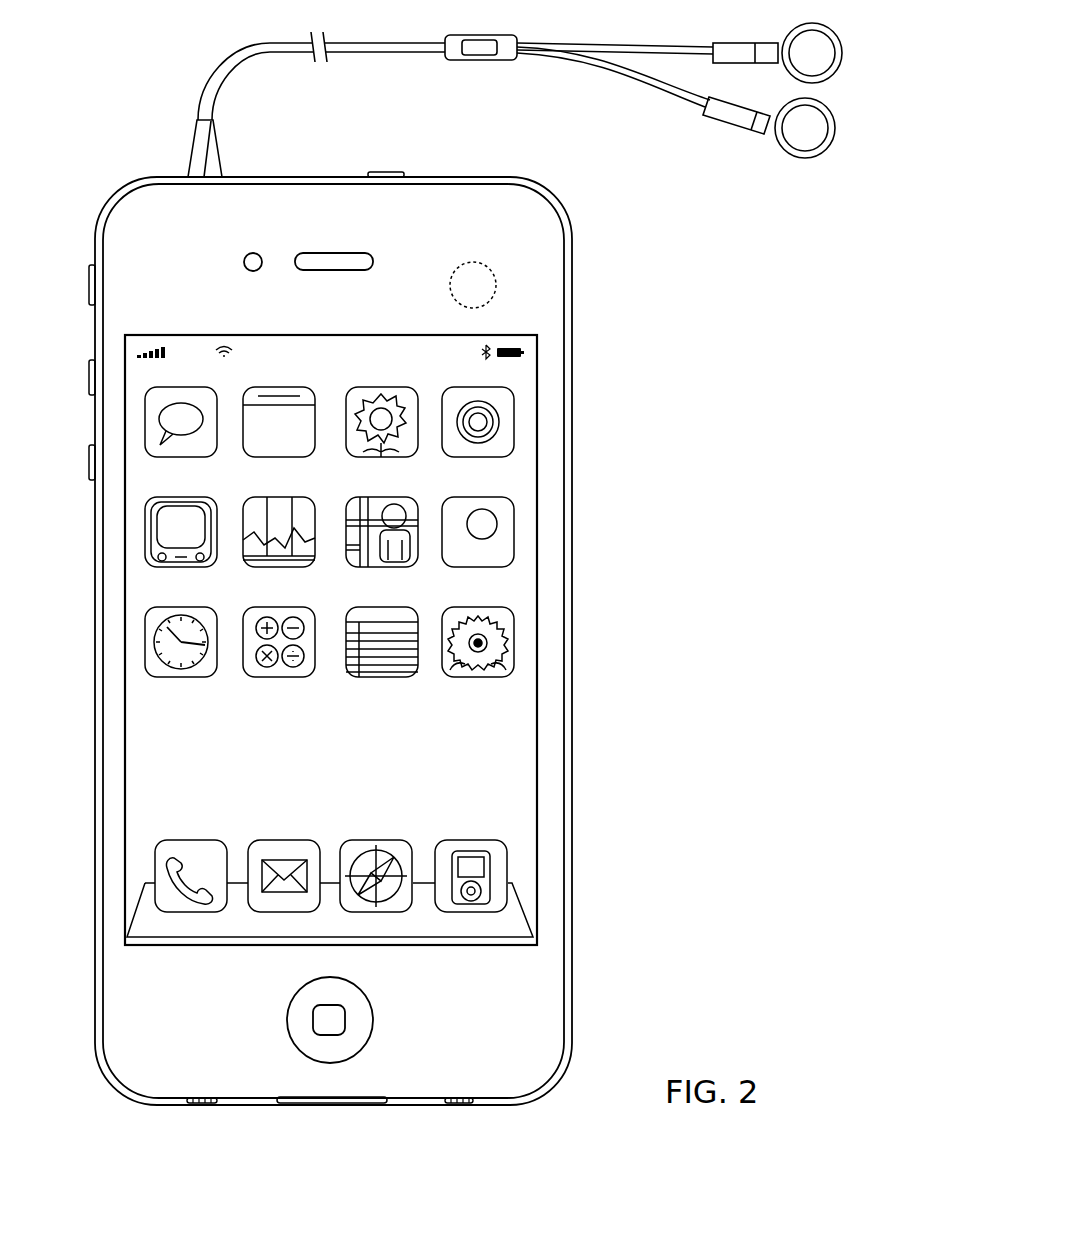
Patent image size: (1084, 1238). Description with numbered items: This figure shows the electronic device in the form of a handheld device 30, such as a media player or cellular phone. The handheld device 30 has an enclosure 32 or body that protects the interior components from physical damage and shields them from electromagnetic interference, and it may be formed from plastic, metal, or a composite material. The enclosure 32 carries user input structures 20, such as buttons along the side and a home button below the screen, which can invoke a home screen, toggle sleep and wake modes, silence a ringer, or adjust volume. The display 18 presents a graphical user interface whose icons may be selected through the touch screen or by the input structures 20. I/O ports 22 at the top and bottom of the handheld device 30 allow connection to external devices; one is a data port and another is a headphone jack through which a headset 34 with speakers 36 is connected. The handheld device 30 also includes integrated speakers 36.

The display 18 is at (538, 548).
The user input structures 20 is at (90, 283).
The I/O ports 22 is at (214, 127).
The handheld device 30 is at (439, 78).
The enclosure 32 is at (572, 348).
The headset 34 is at (263, 47).
The speakers 36 is at (815, 25).